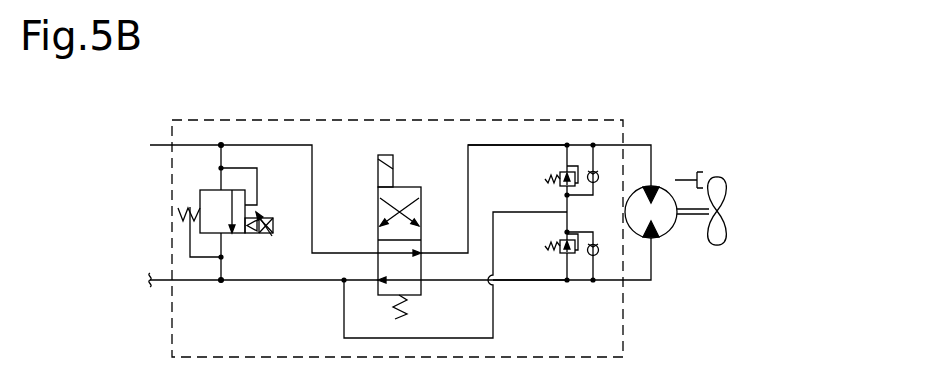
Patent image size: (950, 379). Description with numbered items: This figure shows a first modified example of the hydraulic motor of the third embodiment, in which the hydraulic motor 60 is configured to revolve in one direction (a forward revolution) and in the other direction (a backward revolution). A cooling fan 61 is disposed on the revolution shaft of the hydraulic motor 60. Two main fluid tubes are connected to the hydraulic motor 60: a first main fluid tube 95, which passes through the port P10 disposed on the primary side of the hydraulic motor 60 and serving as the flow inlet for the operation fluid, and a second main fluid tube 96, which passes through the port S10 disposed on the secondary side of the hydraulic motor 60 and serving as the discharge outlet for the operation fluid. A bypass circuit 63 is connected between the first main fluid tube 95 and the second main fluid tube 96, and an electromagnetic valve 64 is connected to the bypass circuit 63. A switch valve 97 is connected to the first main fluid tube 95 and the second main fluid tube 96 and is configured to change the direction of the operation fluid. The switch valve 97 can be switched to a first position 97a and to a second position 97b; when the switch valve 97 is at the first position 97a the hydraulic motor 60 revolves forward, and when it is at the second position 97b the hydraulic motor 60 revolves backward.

The port P10 is at (221, 145).
The port S10 is at (221, 281).
The electromagnetic valve 64 is at (205, 208).
The bypass circuit 63 is at (218, 250).
The switch valve 97 is at (432, 205).
The first position 97a is at (422, 293).
The second position 97b is at (422, 199).
The first main fluid tube 95 is at (507, 145).
The second main fluid tube 96 is at (540, 281).
The hydraulic motor 60 is at (668, 192).
The cooling fan 61 is at (727, 178).